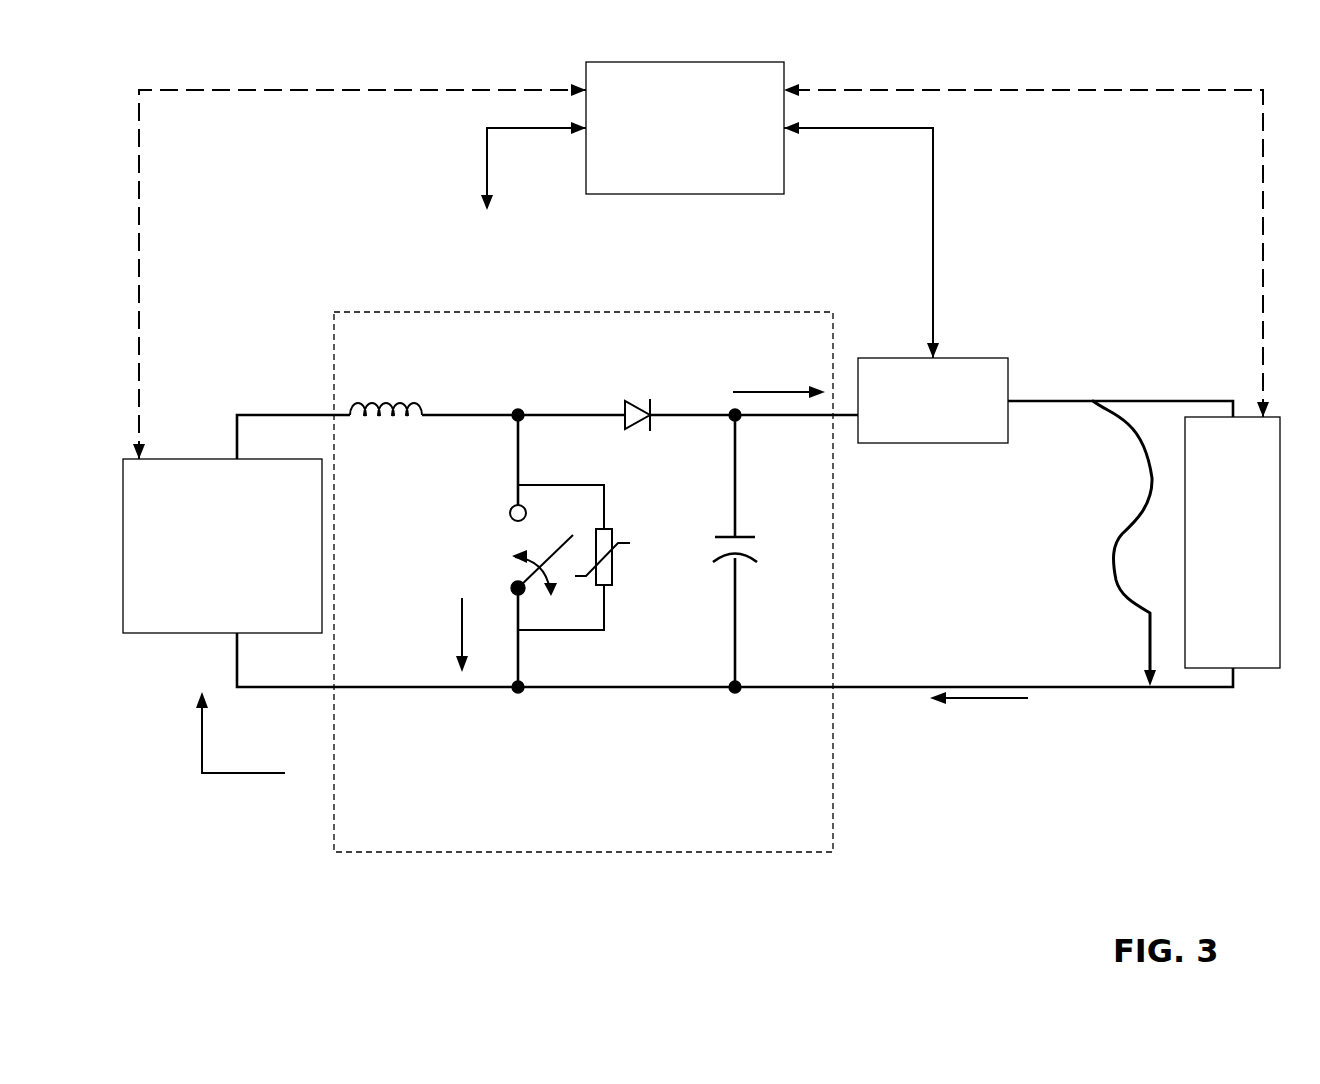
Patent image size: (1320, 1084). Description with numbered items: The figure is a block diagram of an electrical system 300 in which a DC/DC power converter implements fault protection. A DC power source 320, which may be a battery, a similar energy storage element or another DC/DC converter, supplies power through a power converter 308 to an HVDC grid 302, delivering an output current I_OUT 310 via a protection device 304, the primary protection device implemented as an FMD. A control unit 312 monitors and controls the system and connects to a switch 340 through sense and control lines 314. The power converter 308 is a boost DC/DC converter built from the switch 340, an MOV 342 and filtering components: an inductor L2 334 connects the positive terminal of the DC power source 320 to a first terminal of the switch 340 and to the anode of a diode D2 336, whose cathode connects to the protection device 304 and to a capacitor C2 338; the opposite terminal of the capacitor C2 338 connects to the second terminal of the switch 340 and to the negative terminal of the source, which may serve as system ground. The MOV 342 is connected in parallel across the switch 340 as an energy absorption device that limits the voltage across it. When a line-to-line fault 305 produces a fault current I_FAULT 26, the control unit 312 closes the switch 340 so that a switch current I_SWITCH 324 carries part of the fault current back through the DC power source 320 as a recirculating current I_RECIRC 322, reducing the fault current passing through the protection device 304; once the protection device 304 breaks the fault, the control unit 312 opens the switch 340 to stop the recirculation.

The electrical system 300 is at (215, 52).
The control unit 312 is at (669, 166).
The sense and control lines 314 is at (471, 269).
The protection device 304 is at (917, 438).
The line-to-line fault 305 is at (1094, 518).
The HVDC grid 302 is at (1216, 581).
The DC power source 320 is at (206, 571).
The recirculating current 322 is at (227, 756).
The fault current 26 is at (966, 756).
The power converter 308 is at (654, 834).
The inductor L2 334 is at (377, 386).
The switch 340 is at (434, 583).
The switch current 324 is at (417, 654).
The MOV 342 is at (637, 611).
The diode D2 336 is at (624, 386).
The output current 310 is at (764, 386).
The capacitor C2 338 is at (772, 581).